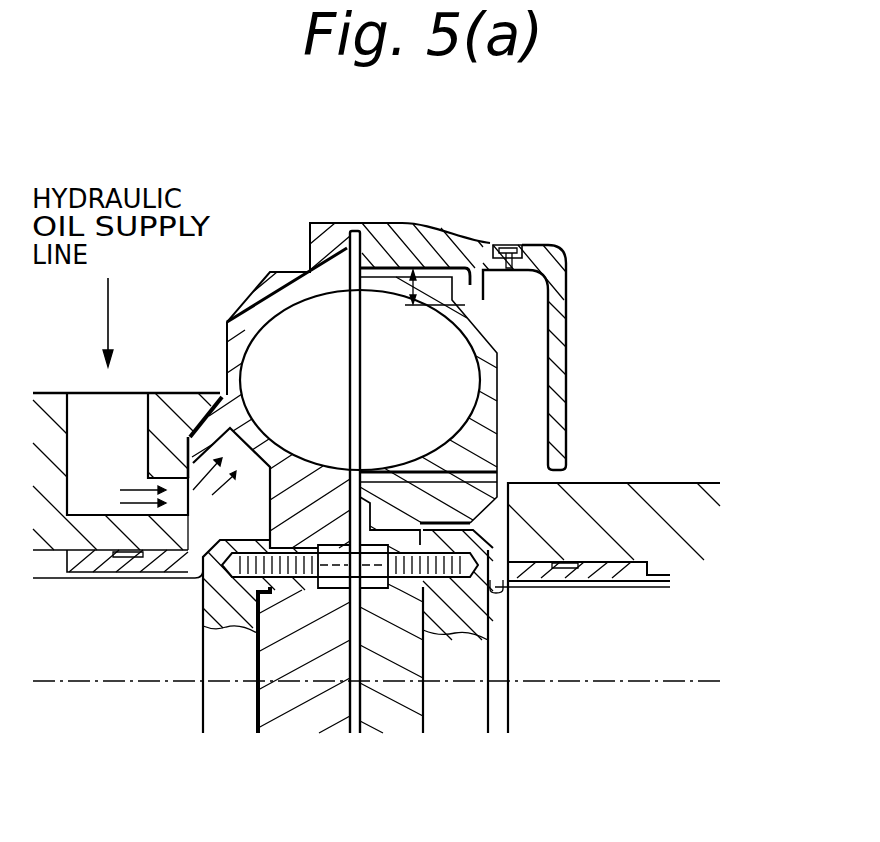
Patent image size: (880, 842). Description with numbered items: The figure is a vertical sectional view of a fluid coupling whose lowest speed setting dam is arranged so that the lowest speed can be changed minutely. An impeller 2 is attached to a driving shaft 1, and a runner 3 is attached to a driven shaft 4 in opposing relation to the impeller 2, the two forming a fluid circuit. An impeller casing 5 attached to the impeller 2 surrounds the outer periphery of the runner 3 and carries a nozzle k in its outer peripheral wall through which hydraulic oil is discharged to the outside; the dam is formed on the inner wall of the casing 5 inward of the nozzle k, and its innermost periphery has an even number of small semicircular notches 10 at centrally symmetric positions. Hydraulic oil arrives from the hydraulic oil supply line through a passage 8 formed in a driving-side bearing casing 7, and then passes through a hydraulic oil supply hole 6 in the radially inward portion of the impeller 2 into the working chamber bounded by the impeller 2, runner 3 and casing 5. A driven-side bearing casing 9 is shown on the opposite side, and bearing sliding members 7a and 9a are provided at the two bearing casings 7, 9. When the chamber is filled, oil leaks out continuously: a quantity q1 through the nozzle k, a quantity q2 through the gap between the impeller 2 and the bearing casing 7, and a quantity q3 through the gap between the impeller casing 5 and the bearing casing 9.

The driving shaft 1 is at (138, 600).
The impeller 2 is at (243, 303).
The runner 3 is at (380, 268).
The driven shaft 4 is at (660, 607).
The impeller casing 5 is at (416, 223).
The hydraulic oil supply hole 6 is at (264, 447).
The driving-side bearing casing 7 is at (163, 404).
The bearing sliding member 7a is at (95, 575).
The passage 8 is at (68, 447).
The driven-side bearing casing 9 is at (661, 483).
The bearing sliding member 9a is at (595, 581).
The small semicircular notches 10 is at (472, 290).
The nozzle k is at (512, 243).
The quantity of oil leaking from the nozzle q1 is at (501, 224).
The quantity of oil leaking from the gap between the impeller and the bearing casing q2 is at (194, 373).
The quantity of oil leaking from the gap between the impeller casing and the bearing q3 is at (591, 457).